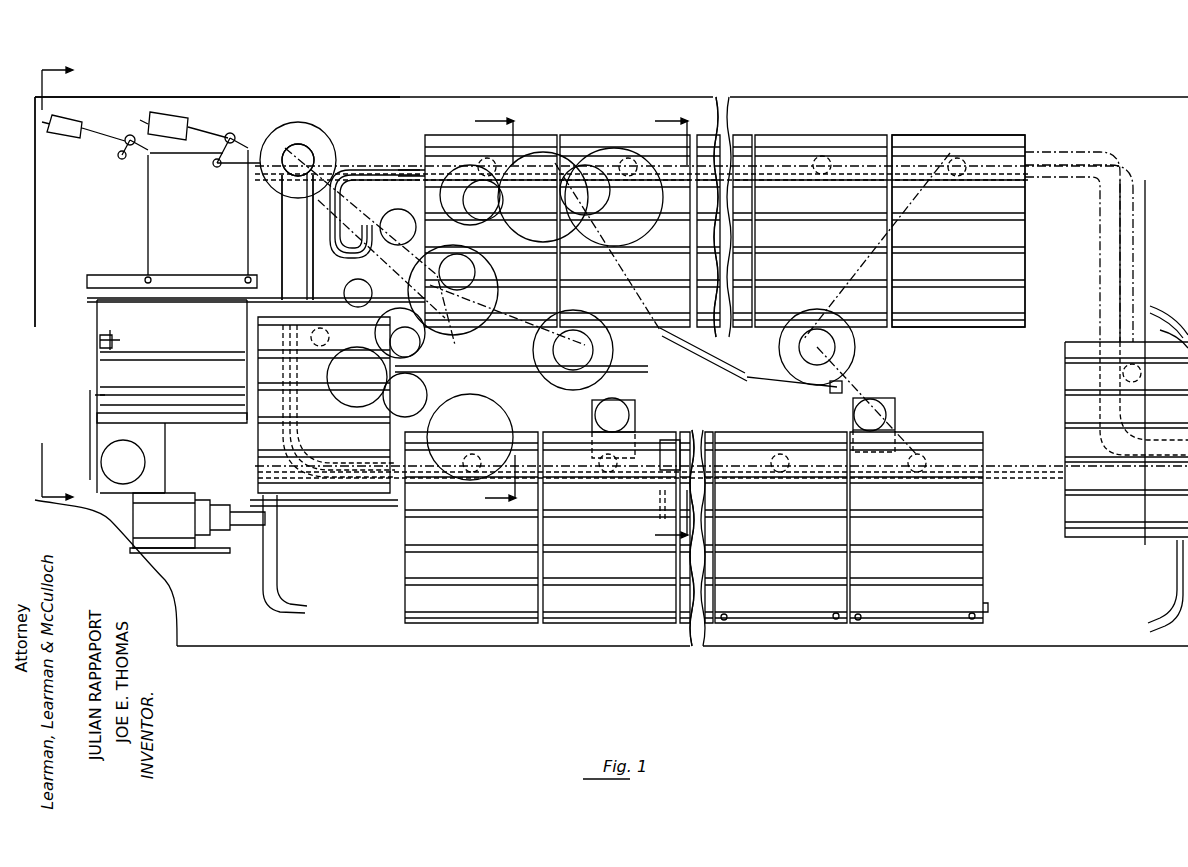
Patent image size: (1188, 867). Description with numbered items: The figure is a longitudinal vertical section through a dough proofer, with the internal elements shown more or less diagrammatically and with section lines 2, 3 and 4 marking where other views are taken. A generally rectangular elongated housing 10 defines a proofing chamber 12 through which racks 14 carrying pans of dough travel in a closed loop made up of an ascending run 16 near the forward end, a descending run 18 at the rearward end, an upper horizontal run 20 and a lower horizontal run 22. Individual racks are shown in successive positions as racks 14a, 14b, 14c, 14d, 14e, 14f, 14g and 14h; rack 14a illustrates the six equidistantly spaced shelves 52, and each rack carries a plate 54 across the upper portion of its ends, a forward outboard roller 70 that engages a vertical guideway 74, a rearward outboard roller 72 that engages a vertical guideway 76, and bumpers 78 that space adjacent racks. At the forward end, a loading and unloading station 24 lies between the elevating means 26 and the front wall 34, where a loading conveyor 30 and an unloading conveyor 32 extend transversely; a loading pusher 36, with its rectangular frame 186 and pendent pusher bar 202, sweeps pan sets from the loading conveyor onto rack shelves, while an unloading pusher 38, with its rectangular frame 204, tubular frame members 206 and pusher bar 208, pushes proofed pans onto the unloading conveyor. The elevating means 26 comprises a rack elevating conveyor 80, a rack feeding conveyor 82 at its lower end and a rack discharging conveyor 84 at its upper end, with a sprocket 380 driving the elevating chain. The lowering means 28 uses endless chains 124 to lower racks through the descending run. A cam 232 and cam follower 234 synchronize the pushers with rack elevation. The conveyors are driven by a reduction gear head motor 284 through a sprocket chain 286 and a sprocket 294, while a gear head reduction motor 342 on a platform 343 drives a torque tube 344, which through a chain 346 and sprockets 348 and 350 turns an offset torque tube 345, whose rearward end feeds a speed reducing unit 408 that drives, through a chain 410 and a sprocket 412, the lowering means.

The housing 10 is at (818, 97).
The proofing chamber 12 is at (873, 108).
The racks 14 is at (925, 138).
The rack 14a is at (610, 133).
The rack 14b is at (450, 133).
The rack 14c is at (405, 556).
The rack 14d is at (258, 455).
The rack 14e is at (970, 136).
The rack 14f is at (1065, 383).
The rack 14g is at (985, 571).
The rack 14h is at (605, 625).
The ascending run 16 is at (254, 257).
The descending run 18 is at (1175, 274).
The upper horizontal run 20 is at (748, 127).
The lower horizontal run 22 is at (732, 421).
The loading and unloading station 24 is at (181, 252).
The elevating means 26 is at (360, 140).
The lowering means 28 is at (1110, 165).
The loading conveyor 30 is at (186, 350).
The unloading conveyor 32 is at (196, 395).
The front wall 34 is at (37, 221).
The loading pusher 36 is at (115, 340).
The unloading pusher 38 is at (470, 361).
The shelves 52 is at (268, 347).
The plate 54 is at (785, 160).
The forward outboard roller 70 is at (722, 625).
The rearward outboard roller 72 is at (834, 622).
The guideway 74 is at (280, 553).
The guideway 76 is at (1177, 571).
The bumpers 78 is at (988, 612).
The rack elevating conveyor 80 is at (284, 149).
The rack feeding conveyor 82 is at (422, 468).
The rack discharging conveyor 84 is at (393, 163).
The endless chains 124 is at (1133, 228).
The rectangular frame 186 is at (130, 292).
The pusher bar 202 is at (115, 342).
The rectangular frame 204 is at (633, 372).
The tubular frame members 206 is at (487, 377).
The pusher bar 208 is at (445, 385).
The cam 232 is at (562, 170).
The cam follower 234 is at (600, 235).
The reduction gear head motor 284 is at (112, 462).
The sprocket chain 286 is at (90, 420).
The sprocket 294 is at (90, 400).
The gear head reduction motor 342 is at (180, 490).
The platform 343 is at (200, 553).
The torque tube 344 is at (344, 507).
The torque tube 345 is at (780, 440).
The chain 346 is at (683, 458).
The sprocket 348 is at (632, 455).
The sprocket 350 is at (655, 517).
The sprocket 380 is at (315, 136).
The speed reducing unit 408 is at (897, 407).
The chain 410 is at (855, 386).
The sprocket 412 is at (845, 348).
The section line 2- 2 is at (489, 309).
The section line 3- 3 is at (665, 327).
The section line 4- 4 is at (65, 284).